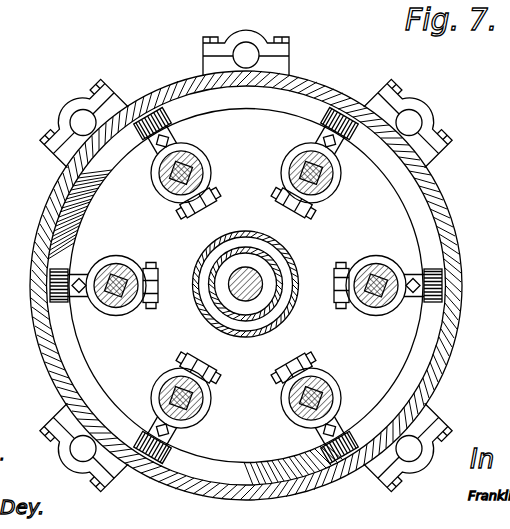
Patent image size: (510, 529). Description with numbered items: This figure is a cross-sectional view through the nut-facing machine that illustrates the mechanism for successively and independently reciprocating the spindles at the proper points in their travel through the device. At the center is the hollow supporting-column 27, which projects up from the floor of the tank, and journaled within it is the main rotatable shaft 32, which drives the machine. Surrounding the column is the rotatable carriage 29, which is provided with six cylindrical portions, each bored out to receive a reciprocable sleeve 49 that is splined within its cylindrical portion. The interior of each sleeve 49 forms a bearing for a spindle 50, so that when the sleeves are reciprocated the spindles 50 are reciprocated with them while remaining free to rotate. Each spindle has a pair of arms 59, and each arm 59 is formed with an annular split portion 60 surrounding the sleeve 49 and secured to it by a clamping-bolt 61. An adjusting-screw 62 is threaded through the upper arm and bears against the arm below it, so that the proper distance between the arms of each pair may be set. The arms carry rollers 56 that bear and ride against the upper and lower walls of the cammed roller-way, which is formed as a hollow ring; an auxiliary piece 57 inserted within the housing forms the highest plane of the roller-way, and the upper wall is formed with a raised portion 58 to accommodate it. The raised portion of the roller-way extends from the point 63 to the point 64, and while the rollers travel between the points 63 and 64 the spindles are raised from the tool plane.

The hollow supporting-column 27 is at (277, 298).
The rotatable carriage 29 is at (283, 247).
The main rotatable shaft 32 is at (246, 299).
The reciprocable sleeve 49 is at (330, 184).
The spindle 50 is at (156, 184).
The roller 56 is at (330, 116).
The auxiliary piece 57 is at (80, 395).
The raised portion of upper wall 58 is at (457, 221).
The arm 59 is at (331, 139).
The annular split portion 60 is at (282, 170).
The clamping-bolt 61 is at (284, 207).
The adjusting-screw 62 is at (322, 144).
The point 63 is at (340, 466).
The point 64 is at (82, 167).